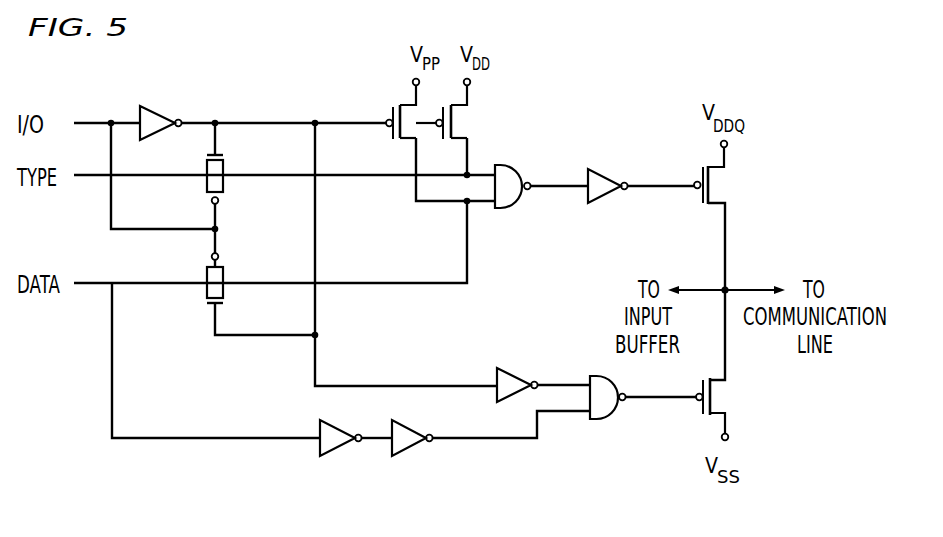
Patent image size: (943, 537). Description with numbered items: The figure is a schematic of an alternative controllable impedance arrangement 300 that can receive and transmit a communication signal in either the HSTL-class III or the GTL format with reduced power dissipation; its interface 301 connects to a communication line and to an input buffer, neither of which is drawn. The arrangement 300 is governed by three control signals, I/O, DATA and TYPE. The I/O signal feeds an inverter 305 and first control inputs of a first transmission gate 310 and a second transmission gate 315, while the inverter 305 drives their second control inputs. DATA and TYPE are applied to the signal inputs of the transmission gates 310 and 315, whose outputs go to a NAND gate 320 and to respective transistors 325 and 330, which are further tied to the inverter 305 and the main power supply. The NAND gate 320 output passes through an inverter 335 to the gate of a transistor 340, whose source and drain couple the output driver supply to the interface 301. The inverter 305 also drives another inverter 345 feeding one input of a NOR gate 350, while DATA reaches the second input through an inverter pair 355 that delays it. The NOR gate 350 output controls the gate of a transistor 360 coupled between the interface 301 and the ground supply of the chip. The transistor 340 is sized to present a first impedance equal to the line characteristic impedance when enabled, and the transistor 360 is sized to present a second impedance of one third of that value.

The controllable impedance arrangement 300 is at (561, 293).
The interface 301 is at (730, 288).
The inverter 305 is at (160, 113).
The first transmission gate 310 is at (226, 270).
The second transmission gate 315 is at (226, 164).
The NAND gate 320 is at (522, 166).
The transistor 325 is at (410, 139).
The transistor 330 is at (460, 139).
The inverter 335 is at (598, 171).
The transistor 340 is at (706, 205).
The inverter 345 is at (507, 368).
The NOR gate 350 is at (601, 420).
The inverter pair 355 is at (430, 476).
The transistor 360 is at (710, 416).